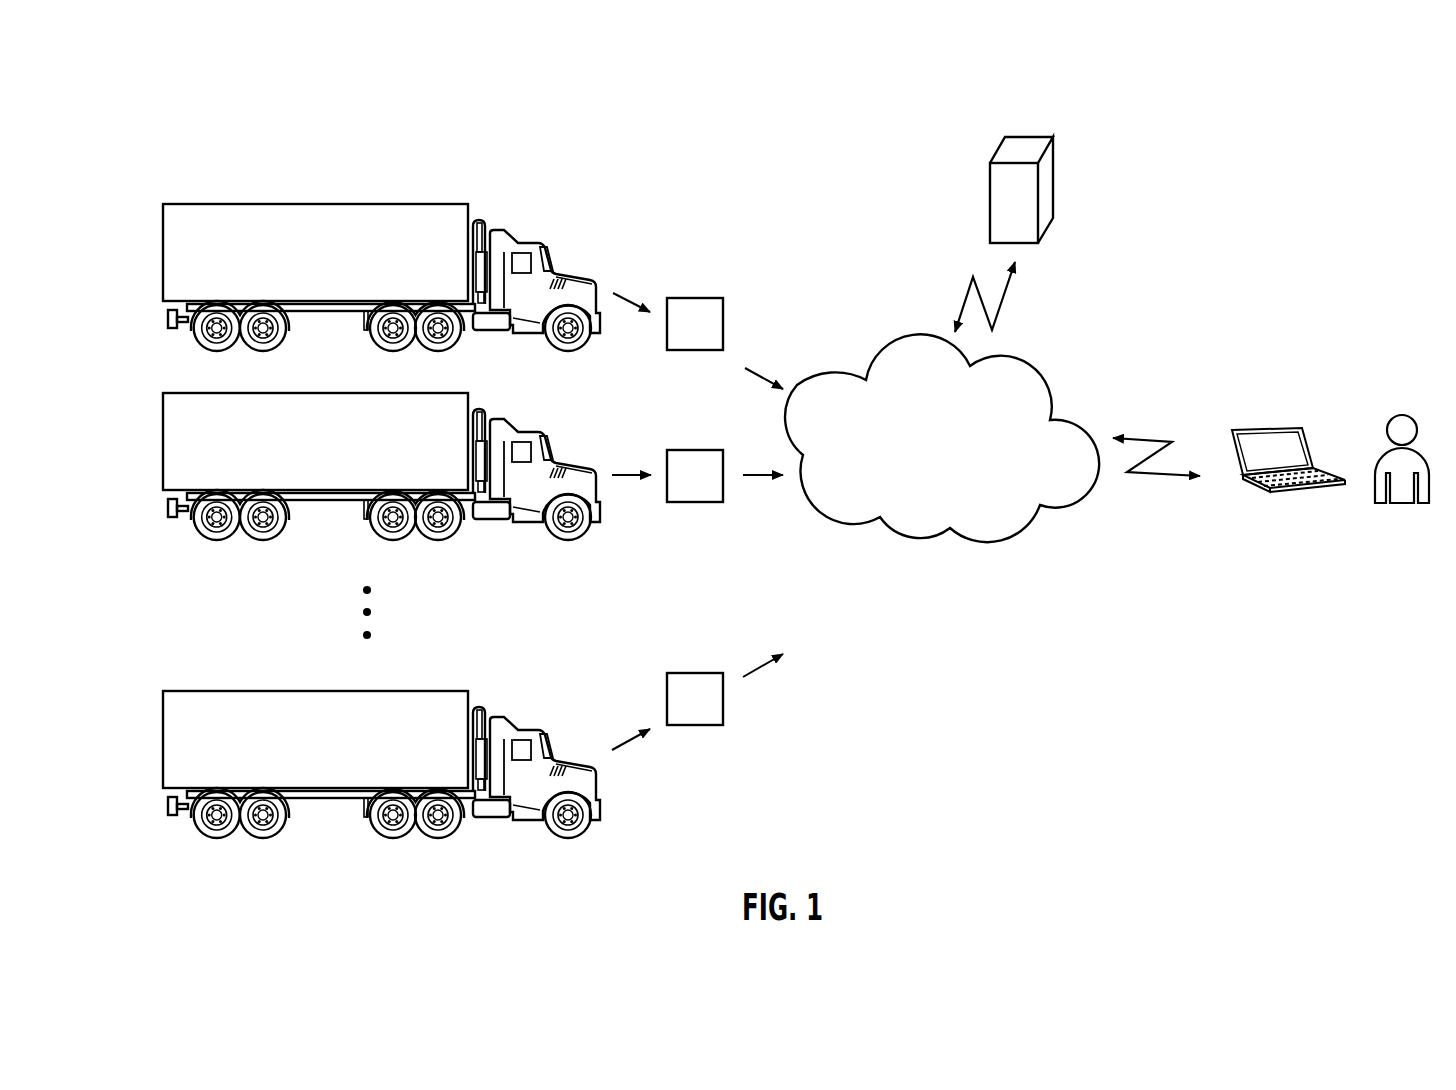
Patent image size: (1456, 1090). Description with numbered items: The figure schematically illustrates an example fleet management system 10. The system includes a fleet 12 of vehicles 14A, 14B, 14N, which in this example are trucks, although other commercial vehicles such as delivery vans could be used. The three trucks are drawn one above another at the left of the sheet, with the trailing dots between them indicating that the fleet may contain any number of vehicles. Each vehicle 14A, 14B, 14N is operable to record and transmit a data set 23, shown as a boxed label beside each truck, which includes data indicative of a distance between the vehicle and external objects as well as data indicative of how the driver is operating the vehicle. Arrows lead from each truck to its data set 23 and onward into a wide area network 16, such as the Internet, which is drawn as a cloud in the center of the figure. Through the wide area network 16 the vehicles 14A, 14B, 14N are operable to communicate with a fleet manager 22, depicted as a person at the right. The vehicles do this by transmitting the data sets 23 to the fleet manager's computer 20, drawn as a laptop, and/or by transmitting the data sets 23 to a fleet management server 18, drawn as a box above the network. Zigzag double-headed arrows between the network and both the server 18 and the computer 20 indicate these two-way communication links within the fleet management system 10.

The fleet management system 10 is at (1378, 68).
The fleet 12 is at (186, 126).
The vehicle 14A is at (556, 221).
The vehicle 14B is at (556, 418).
The vehicle 14N is at (518, 703).
The wide area network 16 is at (923, 525).
The fleet management server 18 is at (1043, 190).
The fleet manager's computer 20 is at (1267, 401).
The fleet manager 22 is at (1413, 403).
The data set 23 is at (709, 337).